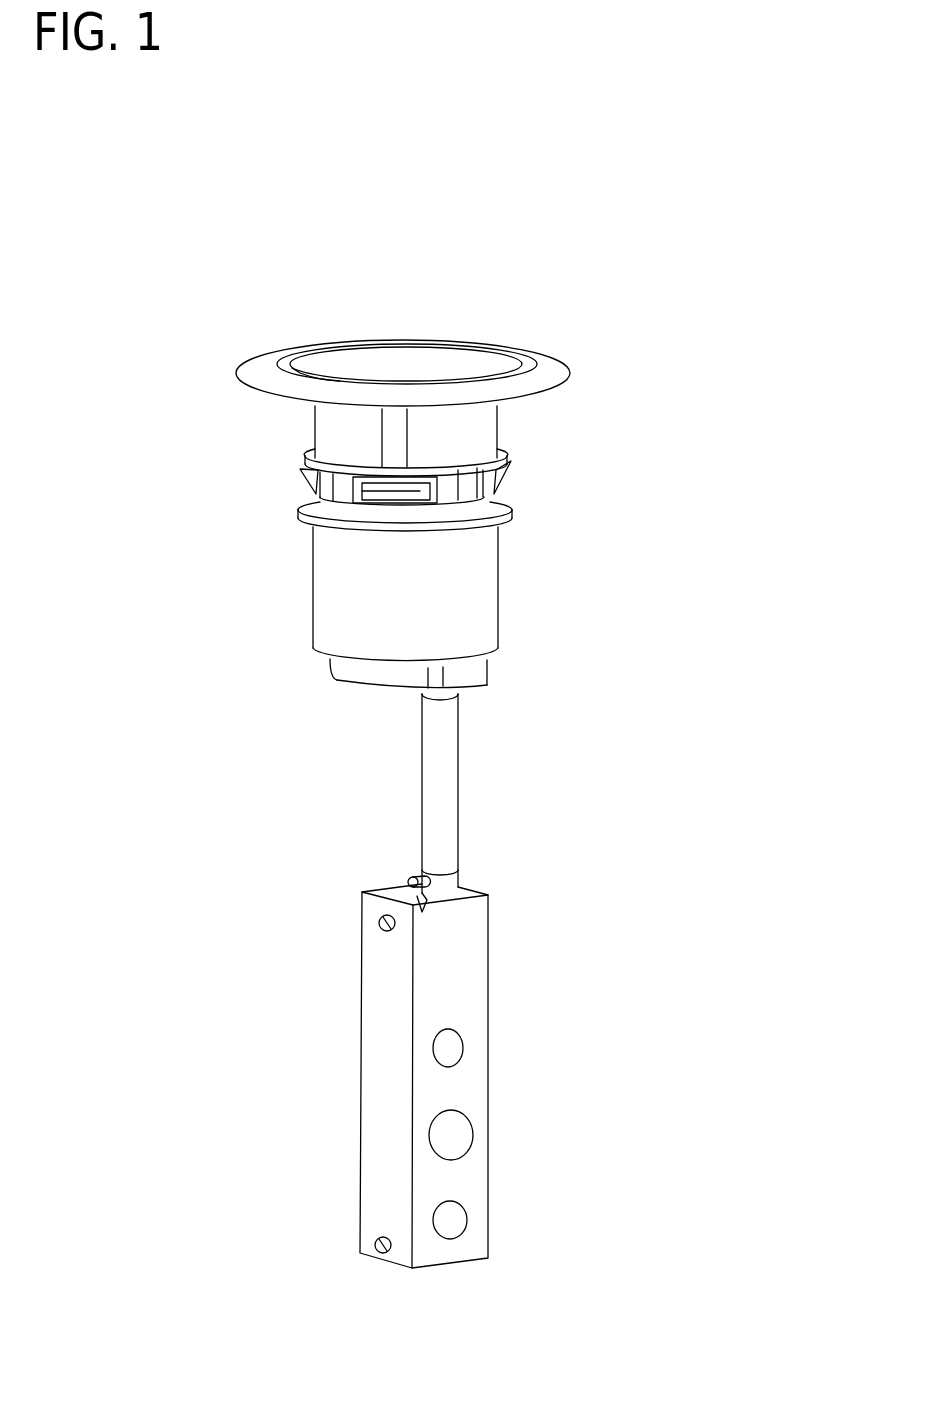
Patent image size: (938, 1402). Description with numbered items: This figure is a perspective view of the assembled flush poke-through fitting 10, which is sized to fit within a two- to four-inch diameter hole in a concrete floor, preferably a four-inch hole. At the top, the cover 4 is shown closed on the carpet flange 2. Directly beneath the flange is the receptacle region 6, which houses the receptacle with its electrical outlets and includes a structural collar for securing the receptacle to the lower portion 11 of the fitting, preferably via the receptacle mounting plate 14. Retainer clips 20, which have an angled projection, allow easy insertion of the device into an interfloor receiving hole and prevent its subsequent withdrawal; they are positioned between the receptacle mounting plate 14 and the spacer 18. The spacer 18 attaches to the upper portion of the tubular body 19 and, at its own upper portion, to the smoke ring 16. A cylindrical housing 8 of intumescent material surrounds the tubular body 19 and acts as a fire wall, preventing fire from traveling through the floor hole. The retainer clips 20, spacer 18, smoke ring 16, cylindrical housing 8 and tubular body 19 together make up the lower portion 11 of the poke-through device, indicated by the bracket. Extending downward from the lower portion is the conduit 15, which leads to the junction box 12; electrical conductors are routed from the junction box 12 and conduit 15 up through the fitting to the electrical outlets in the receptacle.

The flush poke-through fitting 10 is at (222, 236).
The carpet flange 2 is at (552, 377).
The cover 4 is at (423, 365).
The receptacle region 6 is at (333, 427).
The receptacle mounting plate 14 is at (313, 447).
The smoke ring 16 is at (472, 492).
The retainer clips 20 is at (515, 462).
The spacer 18 is at (330, 510).
The cylindrical housing 8 is at (480, 605).
The tubular body 19 is at (472, 675).
The conduit 15 is at (433, 778).
The junction box 12 is at (458, 978).
The lower portion 11 is at (657, 458).